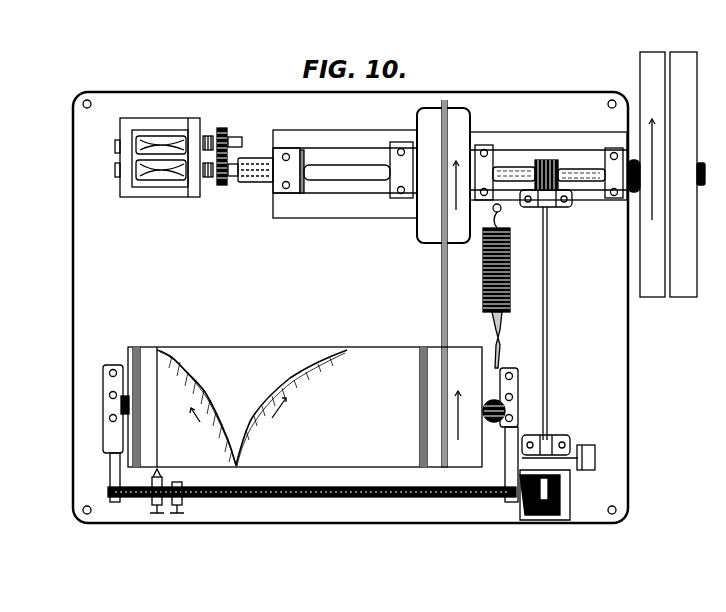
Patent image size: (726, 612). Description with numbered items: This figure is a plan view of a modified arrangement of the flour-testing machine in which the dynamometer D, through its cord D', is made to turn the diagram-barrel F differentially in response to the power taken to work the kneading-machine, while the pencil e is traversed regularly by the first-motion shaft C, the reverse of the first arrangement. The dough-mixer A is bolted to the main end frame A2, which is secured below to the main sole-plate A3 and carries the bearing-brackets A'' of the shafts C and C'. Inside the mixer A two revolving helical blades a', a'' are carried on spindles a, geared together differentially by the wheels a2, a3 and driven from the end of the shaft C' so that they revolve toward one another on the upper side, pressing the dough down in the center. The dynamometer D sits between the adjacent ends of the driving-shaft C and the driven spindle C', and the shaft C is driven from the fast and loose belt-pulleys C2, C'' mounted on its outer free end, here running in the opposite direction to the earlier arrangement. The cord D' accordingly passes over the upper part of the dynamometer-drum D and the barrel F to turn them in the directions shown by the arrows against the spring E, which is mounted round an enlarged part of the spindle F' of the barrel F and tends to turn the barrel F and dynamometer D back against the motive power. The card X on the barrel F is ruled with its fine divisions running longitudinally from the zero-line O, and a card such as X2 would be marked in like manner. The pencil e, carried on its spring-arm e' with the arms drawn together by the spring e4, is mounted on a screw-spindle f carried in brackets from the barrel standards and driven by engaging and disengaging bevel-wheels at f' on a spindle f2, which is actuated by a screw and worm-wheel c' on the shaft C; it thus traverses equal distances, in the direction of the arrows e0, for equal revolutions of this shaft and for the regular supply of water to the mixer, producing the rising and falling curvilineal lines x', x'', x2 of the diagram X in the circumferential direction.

The dough-mixer A is at (157, 156).
The main end frame A2 is at (319, 156).
The main sole-plate A3 is at (350, 307).
The bearing-brackets A'' is at (448, 171).
The spindles a is at (238, 146).
The helical blade a' is at (161, 185).
The helical blade a'' is at (171, 127).
The wheel a2 is at (222, 186).
The wheel a3 is at (224, 128).
The screw-wheel c' is at (255, 158).
The first-motion shaft C is at (607, 163).
The second spindle C' is at (454, 164).
The fast belt-pulley C2 is at (652, 174).
The loose belt-pulley C'' is at (683, 174).
The dynamometer D is at (443, 274).
The cord D' is at (454, 280).
The spring E is at (510, 263).
The indicator-barrel F is at (285, 401).
The barrel spindle F' is at (301, 433).
The roller F'' is at (539, 435).
The screw-spindle f is at (312, 503).
The engaging and disengaging bevel-wheels f' is at (547, 495).
The spindle f2 is at (556, 202).
The recording-pencil e is at (167, 491).
The spring-arm e' is at (172, 365).
The double-headed arrows e0 is at (285, 408).
The spring e4 is at (192, 417).
The zero-line O is at (157, 407).
The curvilineal line x' is at (201, 409).
The curvilineal line x'' is at (252, 408).
The curvilineal line x2 is at (288, 397).
The diagram-card X is at (272, 411).
The axis X2 is at (275, 394).